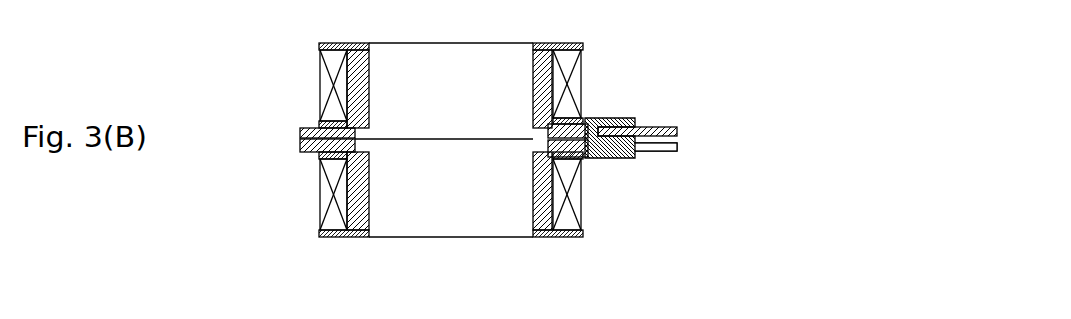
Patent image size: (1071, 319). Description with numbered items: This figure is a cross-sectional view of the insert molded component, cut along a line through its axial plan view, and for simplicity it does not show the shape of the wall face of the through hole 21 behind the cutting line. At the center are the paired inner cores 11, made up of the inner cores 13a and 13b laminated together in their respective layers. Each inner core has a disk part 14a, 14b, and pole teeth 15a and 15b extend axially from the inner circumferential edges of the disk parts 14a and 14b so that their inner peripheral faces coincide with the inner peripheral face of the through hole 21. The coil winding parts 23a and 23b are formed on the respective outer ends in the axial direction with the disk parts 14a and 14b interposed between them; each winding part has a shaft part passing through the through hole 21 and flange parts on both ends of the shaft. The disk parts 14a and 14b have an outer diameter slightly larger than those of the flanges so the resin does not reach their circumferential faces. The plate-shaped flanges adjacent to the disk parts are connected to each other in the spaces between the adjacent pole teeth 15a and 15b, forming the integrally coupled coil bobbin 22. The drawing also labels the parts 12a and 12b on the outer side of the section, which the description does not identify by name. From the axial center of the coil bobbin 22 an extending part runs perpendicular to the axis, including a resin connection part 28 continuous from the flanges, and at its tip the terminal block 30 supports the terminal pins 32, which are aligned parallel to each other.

The paired inner cores 11 is at (280, 215).
The lower right yoke 12a is at (580, 218).
The upper right yoke 12b is at (583, 62).
The inner core 13a is at (300, 147).
The inner core 13b is at (300, 132).
The disk part 14a is at (580, 170).
The disk part 14b is at (568, 114).
The pole teeth 15a is at (370, 184).
The pole teeth 15b is at (370, 97).
The through hole 21 is at (385, 44).
The coil bobbin 22 is at (590, 42).
The coil winding part 23a is at (336, 233).
The coil winding part 23b is at (336, 64).
The resin connection part 28 is at (586, 118).
The terminal block 30 is at (616, 119).
The terminal pins 32 is at (677, 131).